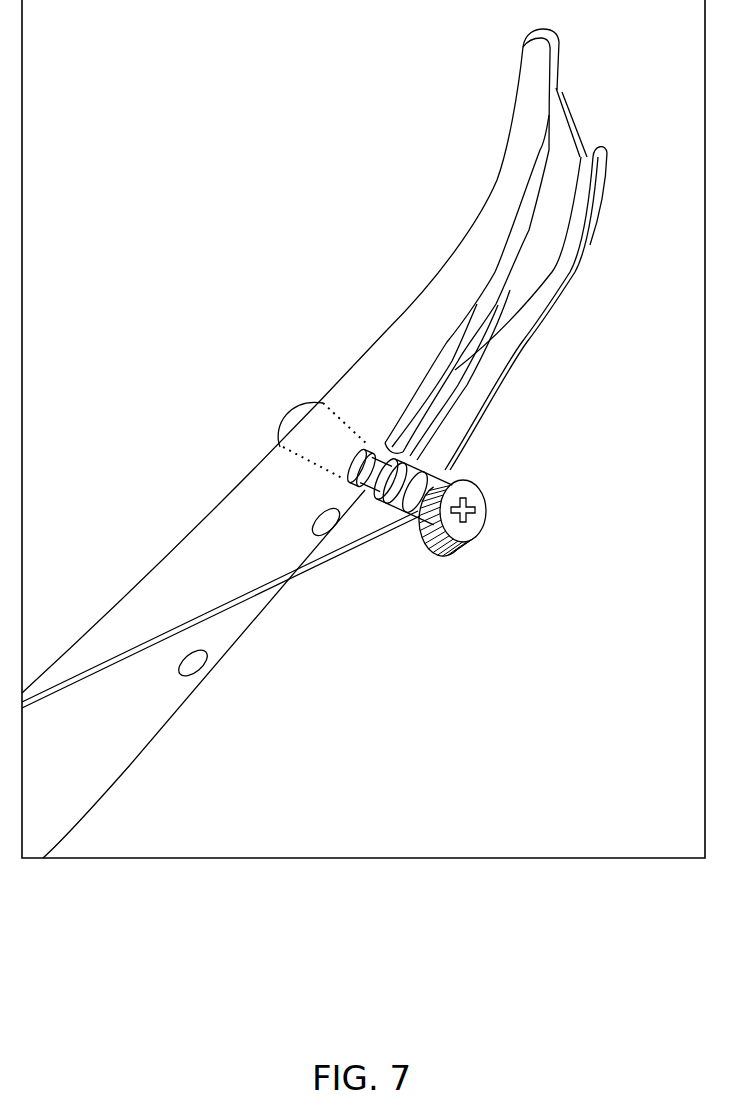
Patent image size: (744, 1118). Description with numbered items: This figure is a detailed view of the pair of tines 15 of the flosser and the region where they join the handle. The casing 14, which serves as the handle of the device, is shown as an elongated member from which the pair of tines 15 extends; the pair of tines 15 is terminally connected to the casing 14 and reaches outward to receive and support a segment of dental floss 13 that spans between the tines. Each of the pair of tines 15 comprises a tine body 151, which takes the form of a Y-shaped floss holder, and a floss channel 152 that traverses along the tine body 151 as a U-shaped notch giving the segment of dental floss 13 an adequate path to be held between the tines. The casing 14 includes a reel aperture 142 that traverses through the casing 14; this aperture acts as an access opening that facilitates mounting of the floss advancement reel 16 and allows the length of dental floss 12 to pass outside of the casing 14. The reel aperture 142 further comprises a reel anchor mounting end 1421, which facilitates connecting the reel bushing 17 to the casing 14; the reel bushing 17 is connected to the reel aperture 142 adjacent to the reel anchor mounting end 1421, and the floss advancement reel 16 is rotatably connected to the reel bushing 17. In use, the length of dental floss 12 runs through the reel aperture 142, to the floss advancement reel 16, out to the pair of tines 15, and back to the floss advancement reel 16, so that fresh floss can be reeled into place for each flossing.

The length of dental floss 12 is at (405, 410).
The segment of dental floss 13 is at (577, 133).
The casing 14 is at (296, 671).
The reel aperture 142 is at (337, 457).
The reel anchor mounting end 1421 is at (282, 445).
The pair of tines 15 is at (398, 222).
The tine body 151 is at (512, 117).
The floss channel 152 is at (465, 322).
The floss advancement reel 16 is at (456, 573).
The reel bushing 17 is at (303, 400).